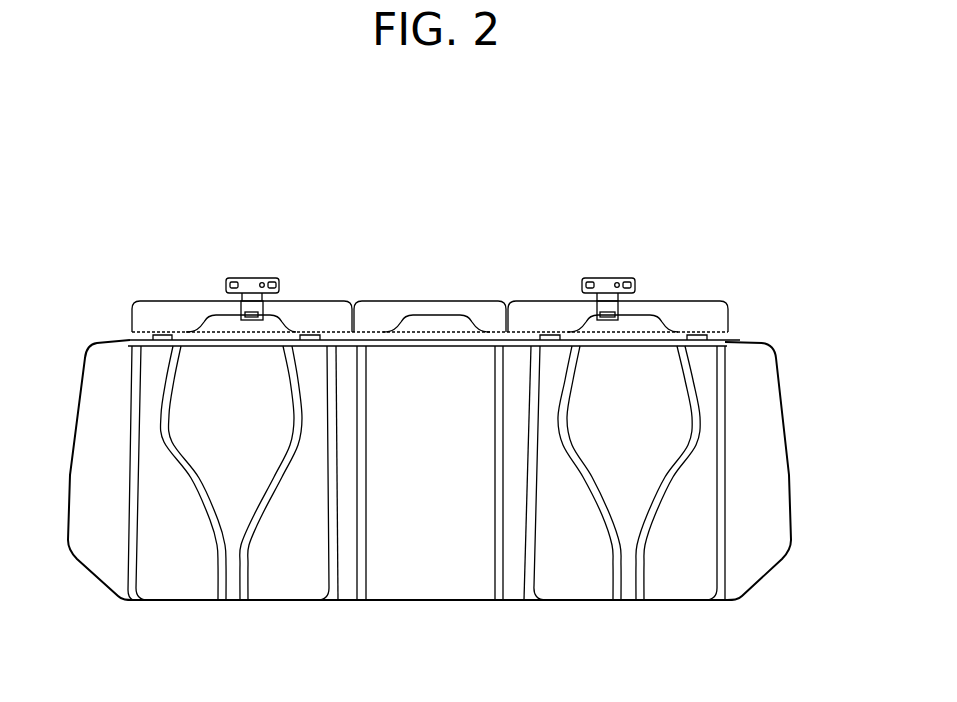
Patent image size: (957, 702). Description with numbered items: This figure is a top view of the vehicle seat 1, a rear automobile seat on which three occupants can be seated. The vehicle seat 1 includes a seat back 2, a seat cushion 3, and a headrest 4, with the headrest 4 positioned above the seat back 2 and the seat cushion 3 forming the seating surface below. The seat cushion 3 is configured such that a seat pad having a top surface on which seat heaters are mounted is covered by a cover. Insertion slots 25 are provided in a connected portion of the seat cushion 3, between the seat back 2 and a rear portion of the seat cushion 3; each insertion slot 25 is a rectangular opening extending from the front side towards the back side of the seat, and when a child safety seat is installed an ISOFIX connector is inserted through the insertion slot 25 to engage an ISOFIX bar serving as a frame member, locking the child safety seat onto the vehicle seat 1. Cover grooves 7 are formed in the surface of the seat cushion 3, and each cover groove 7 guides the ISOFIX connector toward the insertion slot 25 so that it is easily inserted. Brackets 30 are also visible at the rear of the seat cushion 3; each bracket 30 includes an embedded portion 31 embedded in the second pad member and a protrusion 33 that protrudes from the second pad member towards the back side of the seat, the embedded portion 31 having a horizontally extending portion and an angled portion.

The vehicle seat 1 is at (682, 198).
The seat back 2 is at (372, 313).
The seat cushion 3 is at (693, 494).
The headrest 4 is at (447, 330).
The cover groove 7 is at (640, 566).
The insertion slot 25 is at (699, 333).
The bracket 30 is at (716, 231).
The embedded portion 31 is at (626, 313).
The protrusion 33 is at (637, 278).